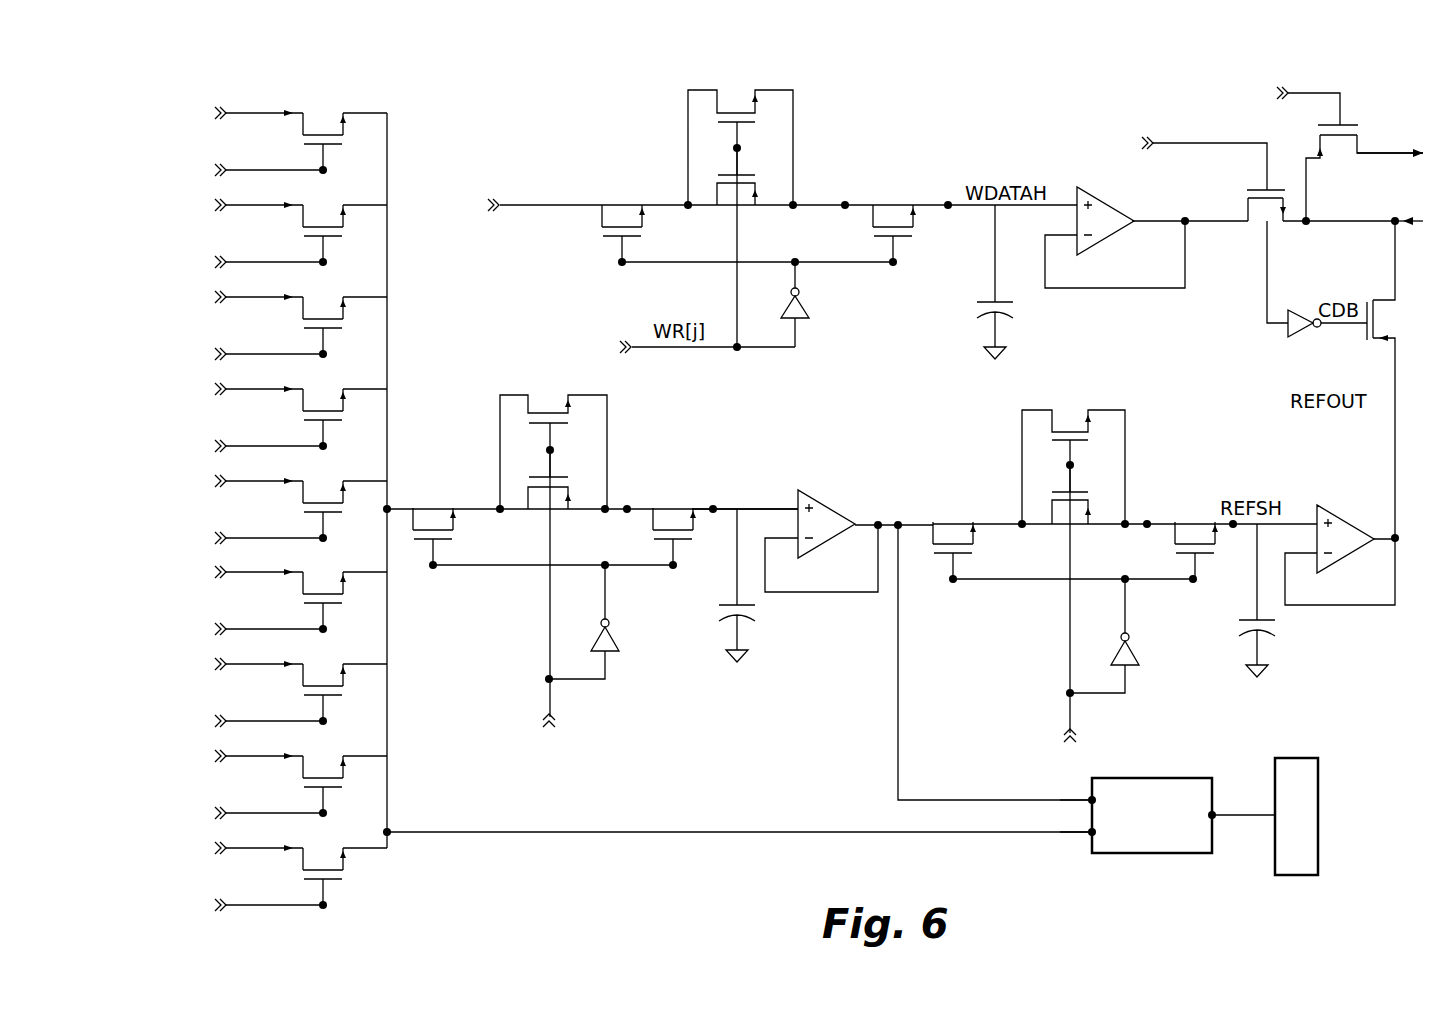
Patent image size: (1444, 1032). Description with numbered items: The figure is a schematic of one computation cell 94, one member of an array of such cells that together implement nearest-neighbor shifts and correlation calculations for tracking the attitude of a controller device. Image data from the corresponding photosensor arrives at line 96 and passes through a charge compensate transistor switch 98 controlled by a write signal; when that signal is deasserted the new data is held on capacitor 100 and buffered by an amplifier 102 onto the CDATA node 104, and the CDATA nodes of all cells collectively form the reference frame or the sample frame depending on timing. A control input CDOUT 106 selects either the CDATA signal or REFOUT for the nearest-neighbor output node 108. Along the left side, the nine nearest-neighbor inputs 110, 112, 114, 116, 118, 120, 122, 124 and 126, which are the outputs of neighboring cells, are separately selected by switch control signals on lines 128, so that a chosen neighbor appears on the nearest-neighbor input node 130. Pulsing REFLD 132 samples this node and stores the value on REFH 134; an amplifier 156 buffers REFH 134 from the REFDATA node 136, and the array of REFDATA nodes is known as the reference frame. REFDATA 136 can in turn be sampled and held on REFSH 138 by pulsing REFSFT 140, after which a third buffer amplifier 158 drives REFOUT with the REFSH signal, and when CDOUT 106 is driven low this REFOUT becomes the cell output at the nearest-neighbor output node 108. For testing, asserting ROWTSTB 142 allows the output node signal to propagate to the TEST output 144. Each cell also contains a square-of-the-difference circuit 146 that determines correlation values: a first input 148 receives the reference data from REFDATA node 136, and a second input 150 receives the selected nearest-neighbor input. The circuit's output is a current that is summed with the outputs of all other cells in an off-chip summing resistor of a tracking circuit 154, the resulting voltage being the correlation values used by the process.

The computation cell 94 is at (664, 877).
The line 96 is at (552, 206).
The charge compensate transistor switch 98 is at (670, 187).
The capacitor 100 is at (985, 312).
The amplifier 102 is at (1107, 200).
The CDATA node 104 is at (1200, 223).
The CDOUT control input 106 is at (1160, 142).
The NN(0) node 108 is at (1400, 225).
The NN(0) nearest-neighbor input 110 is at (226, 849).
The NN(1) nearest-neighbor input 112 is at (226, 757).
The NN(2) nearest-neighbor input 114 is at (226, 665).
The NN(3) nearest-neighbor input 116 is at (226, 573).
The NN(4) nearest-neighbor input 118 is at (226, 482).
The NN(5) nearest-neighbor input 120 is at (226, 390).
The NN(6) nearest-neighbor input 122 is at (226, 298).
The NN(7) nearest-neighbor input 124 is at (226, 206).
The NN(8) nearest-neighbor input 126 is at (226, 114).
The lines 128 is at (233, 533).
The nearest-neighbor input node 130 is at (398, 511).
The REFLD line 132 is at (545, 702).
The REFH node 134 is at (712, 506).
The REFDATA node 136 is at (918, 528).
The REFSH node 138 is at (1163, 520).
The REFSFT signal 140 is at (1068, 720).
The ROWTSTB signal 142 is at (1314, 95).
The TEST output 144 is at (1398, 154).
The square-of-the-difference circuit 146 is at (1153, 838).
The first input 148 is at (1083, 798).
The second input 150 is at (1053, 833).
The tracking circuit 154 is at (1310, 758).
The amplifier 156 is at (827, 517).
The third buffer amplifier 158 is at (1345, 533).